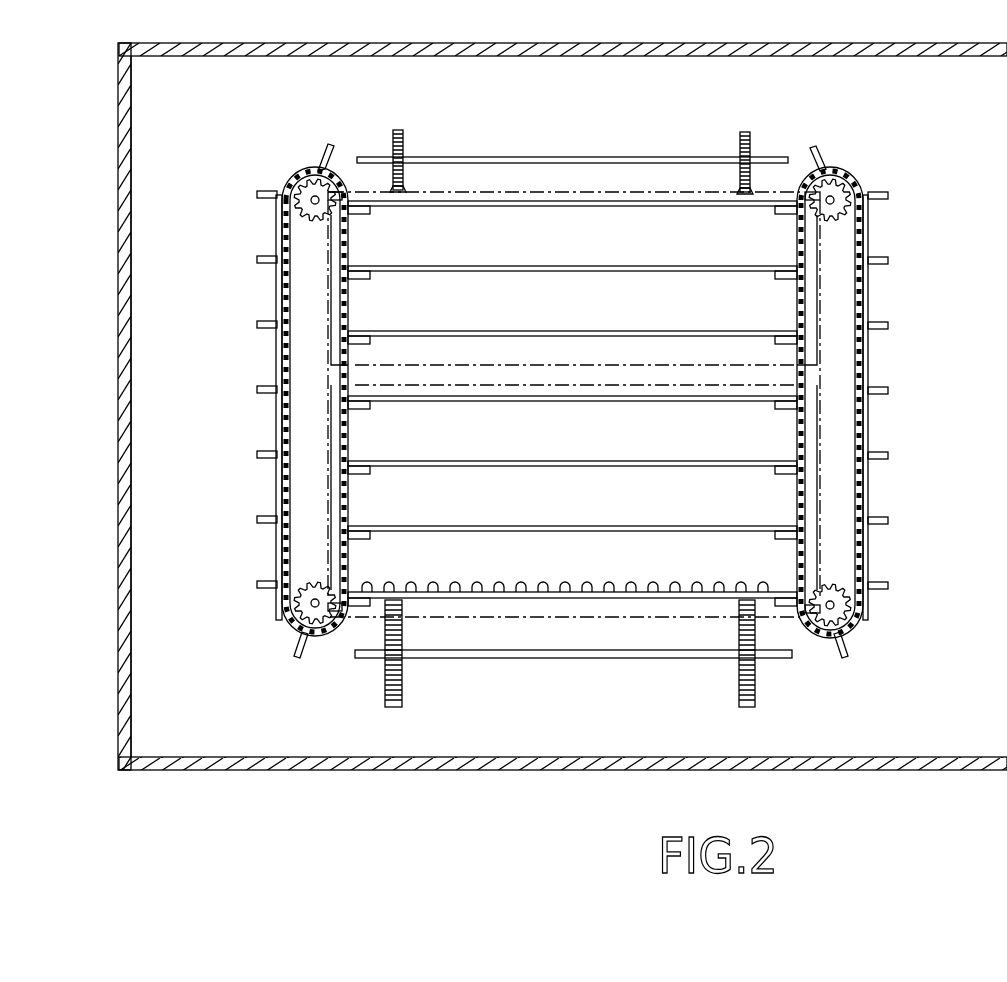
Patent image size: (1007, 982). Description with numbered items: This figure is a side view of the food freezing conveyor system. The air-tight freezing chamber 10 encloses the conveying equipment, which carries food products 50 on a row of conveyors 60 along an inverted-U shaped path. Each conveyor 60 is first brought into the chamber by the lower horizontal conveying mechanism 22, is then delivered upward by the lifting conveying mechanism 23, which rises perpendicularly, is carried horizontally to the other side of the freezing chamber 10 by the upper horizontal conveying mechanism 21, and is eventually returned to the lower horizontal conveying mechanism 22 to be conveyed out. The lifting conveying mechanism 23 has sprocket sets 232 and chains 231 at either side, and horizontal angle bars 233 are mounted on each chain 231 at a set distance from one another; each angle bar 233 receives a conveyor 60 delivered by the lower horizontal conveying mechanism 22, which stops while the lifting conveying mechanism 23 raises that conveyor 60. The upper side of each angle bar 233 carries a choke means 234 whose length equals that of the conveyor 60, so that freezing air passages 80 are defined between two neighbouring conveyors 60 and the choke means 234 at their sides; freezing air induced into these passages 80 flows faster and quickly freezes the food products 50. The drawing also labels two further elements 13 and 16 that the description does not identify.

The freezing chamber 10 is at (110, 245).
The upper support bar 13 is at (614, 190).
The lower support bar 16 is at (574, 614).
The upper horizontal conveying mechanism 21 is at (743, 130).
The lower horizontal conveying mechanism 22 is at (755, 707).
The lifting conveying mechanism 23 is at (258, 350).
The chains 231 is at (797, 256).
The sprocket sets 232 is at (845, 193).
The horizontal angle bars 233 is at (888, 392).
The choke means 234 is at (868, 418).
The food products 50 is at (518, 584).
The conveyors 60 is at (585, 270).
The freezing air passages 80 is at (542, 492).